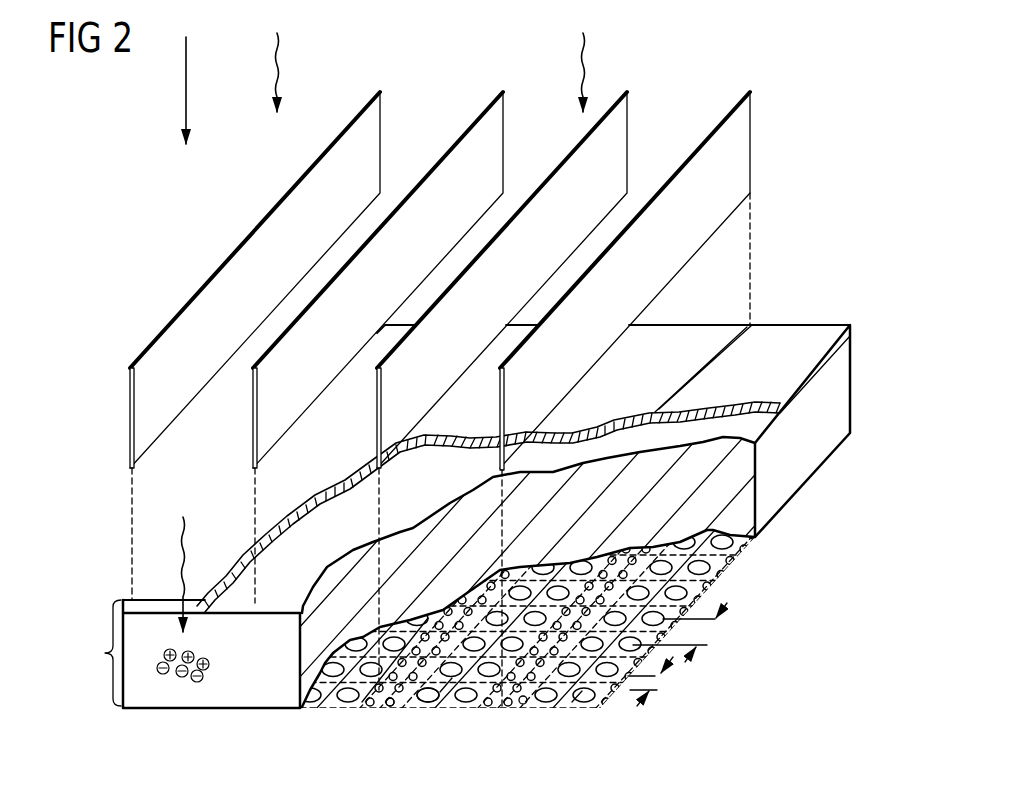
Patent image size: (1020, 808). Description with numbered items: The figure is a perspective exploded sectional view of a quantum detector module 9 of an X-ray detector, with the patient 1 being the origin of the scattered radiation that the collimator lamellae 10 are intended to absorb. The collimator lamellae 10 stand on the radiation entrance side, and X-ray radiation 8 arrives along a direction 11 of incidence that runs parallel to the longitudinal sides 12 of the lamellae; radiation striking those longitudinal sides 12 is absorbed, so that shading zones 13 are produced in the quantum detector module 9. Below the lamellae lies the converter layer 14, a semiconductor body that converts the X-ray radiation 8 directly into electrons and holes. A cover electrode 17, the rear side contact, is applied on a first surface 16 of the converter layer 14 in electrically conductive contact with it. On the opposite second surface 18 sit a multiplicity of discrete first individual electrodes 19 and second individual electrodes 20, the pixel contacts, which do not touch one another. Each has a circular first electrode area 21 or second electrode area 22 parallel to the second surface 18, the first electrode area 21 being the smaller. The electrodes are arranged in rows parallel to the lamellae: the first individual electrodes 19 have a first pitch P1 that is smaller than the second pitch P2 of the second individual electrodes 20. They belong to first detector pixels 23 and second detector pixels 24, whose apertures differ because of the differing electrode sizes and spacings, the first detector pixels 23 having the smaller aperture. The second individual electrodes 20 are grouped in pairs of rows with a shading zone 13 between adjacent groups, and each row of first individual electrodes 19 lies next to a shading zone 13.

The ions 1 is at (169, 684).
The X-ray radiation 8 is at (281, 58).
The quantum detector module 9 is at (102, 653).
The collimator lamellae 10 is at (468, 369).
The direction of incidence 11 is at (187, 97).
The longitudinal sides 12 is at (191, 297).
The shading zones 13 is at (731, 343).
The converter layer 14 is at (845, 396).
The first surface 16 is at (314, 521).
The cover electrode 17 is at (822, 333).
The second surface 18 is at (738, 548).
The first individual electrodes 19 is at (389, 707).
The second individual electrodes 20 is at (432, 693).
The first electrode area 21 is at (362, 702).
The second electrode area 22 is at (440, 692).
The first detector pixels 23 is at (523, 693).
The second detector pixels 24 is at (572, 702).
The first pitch P1 is at (657, 680).
The second pitch P2 is at (707, 632).